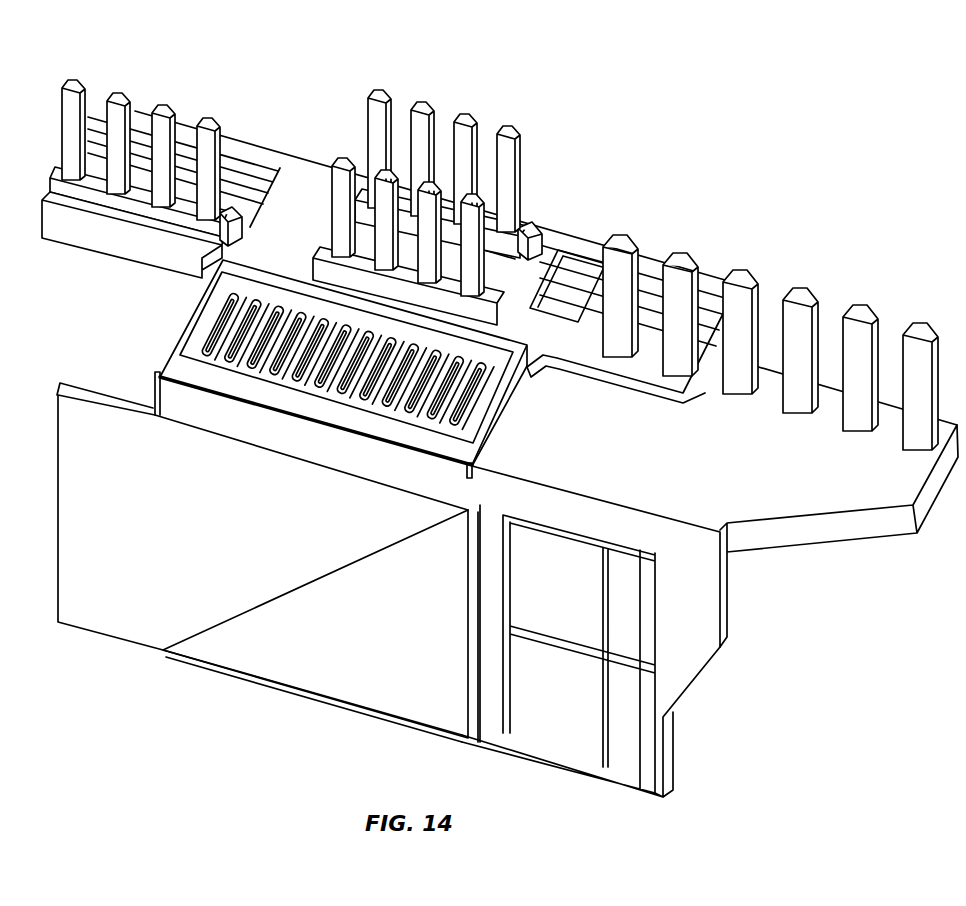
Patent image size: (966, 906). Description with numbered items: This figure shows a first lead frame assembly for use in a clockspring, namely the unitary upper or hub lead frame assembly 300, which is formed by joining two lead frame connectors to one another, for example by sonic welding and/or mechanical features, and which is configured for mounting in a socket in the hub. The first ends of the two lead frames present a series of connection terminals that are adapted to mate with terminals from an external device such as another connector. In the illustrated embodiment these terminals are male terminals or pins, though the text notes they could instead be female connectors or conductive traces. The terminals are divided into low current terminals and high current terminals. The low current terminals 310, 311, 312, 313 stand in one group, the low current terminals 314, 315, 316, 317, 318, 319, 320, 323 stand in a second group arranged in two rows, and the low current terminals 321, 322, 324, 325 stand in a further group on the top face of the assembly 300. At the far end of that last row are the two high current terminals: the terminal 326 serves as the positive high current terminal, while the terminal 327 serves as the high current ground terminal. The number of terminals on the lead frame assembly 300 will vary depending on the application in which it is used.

The upper lead frame assembly 300 is at (787, 614).
The connection terminal 310 is at (73, 81).
The connection terminal 311 is at (117, 92).
The connection terminal 312 is at (162, 107).
The connection terminal 313 is at (205, 119).
The connection terminal 314 is at (343, 159).
The connection terminal 315 is at (422, 103).
The connection terminal 316 is at (383, 172).
The connection terminal 317 is at (463, 117).
The connection terminal 318 is at (432, 183).
The connection terminal 319 is at (514, 131).
The connection terminal 320 is at (478, 200).
The connection terminal 321 is at (622, 237).
The connection terminal 322 is at (684, 256).
The connection terminal 323 is at (382, 92).
The connection terminal 324 is at (743, 271).
The connection terminal 325 is at (802, 288).
The positive high current terminal 326 is at (862, 307).
The high current ground terminal 327 is at (920, 324).